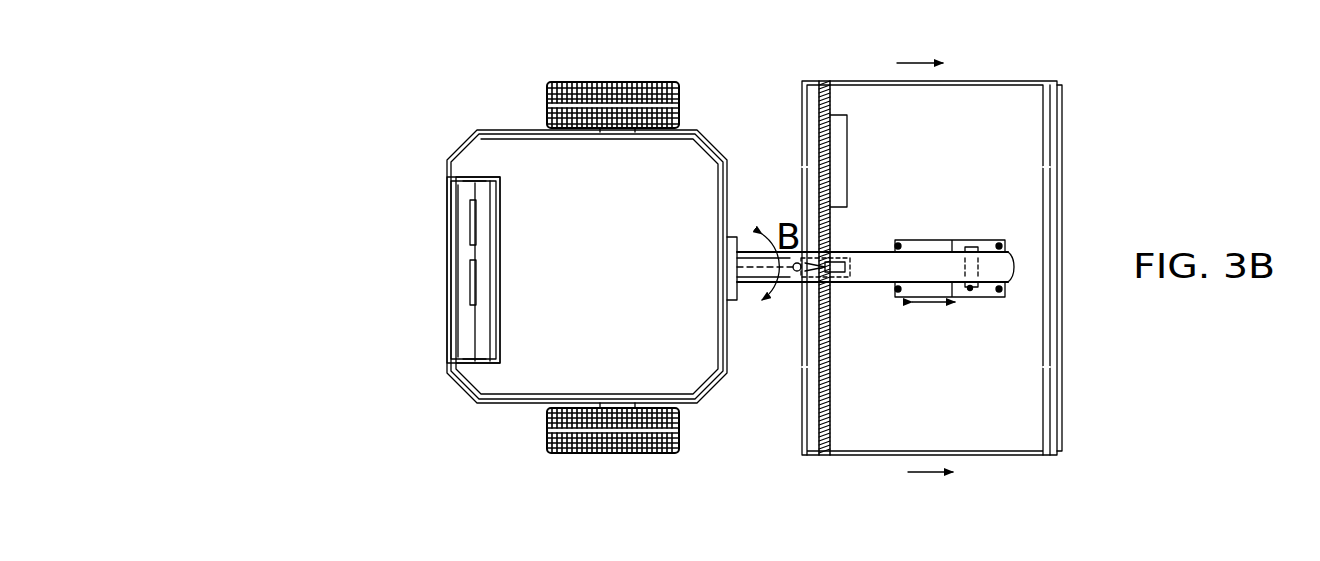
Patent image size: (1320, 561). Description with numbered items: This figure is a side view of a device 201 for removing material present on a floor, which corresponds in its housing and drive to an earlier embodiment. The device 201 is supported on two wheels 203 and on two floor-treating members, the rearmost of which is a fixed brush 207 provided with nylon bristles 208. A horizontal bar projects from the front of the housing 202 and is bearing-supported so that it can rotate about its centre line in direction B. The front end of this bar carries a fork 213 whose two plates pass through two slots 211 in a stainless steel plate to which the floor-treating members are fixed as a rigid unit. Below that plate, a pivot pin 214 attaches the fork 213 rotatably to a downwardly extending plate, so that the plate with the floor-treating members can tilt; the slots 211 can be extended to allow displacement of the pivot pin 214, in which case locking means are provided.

The device 201 is at (440, 208).
The housing 202 is at (645, 279).
The wheels 203 is at (548, 102).
The fixed brush 207 is at (828, 441).
The nylon bristles 208 is at (849, 157).
The slots 211 is at (898, 245).
The fork 213 is at (1003, 245).
The pivot pin 214 is at (970, 289).